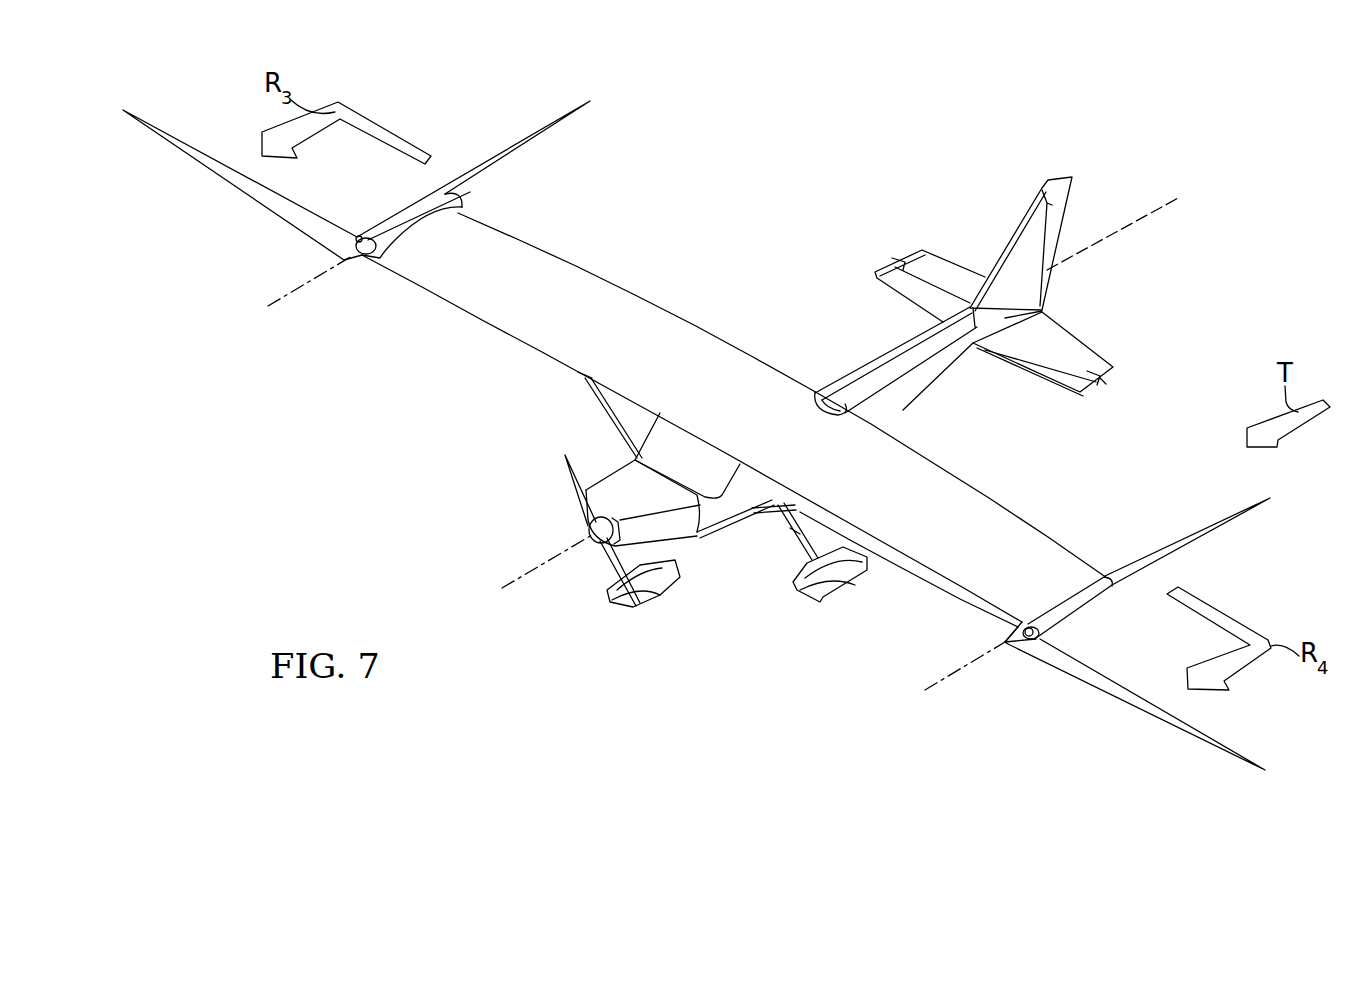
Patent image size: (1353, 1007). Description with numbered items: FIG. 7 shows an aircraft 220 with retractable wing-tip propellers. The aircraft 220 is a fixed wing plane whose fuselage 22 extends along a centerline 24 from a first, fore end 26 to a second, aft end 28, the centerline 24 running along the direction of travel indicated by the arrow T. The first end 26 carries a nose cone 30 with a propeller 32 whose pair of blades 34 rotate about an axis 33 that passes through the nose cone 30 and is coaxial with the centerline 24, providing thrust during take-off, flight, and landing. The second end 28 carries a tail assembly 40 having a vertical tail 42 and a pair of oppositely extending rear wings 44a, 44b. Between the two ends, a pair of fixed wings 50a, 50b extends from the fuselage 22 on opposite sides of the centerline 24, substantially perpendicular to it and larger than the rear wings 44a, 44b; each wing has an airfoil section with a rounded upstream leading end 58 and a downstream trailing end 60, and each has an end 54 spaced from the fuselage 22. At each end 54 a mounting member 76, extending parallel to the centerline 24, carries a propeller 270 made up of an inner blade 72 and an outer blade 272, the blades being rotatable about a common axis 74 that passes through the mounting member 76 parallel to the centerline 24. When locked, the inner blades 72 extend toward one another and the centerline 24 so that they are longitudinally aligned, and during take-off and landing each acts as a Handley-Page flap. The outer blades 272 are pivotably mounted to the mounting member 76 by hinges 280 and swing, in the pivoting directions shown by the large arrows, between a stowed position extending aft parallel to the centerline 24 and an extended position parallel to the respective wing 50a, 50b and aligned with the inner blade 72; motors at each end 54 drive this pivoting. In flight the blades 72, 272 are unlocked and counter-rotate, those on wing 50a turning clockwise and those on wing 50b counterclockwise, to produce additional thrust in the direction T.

The fuselage 22 is at (910, 388).
The centerline 24 is at (526, 591).
The first end 26 is at (671, 620).
The second end 28 is at (1135, 389).
The nose cone 30 is at (586, 541).
The propeller 32 is at (566, 534).
The axis 33 is at (546, 582).
The blades 34 is at (570, 483).
The tail assembly 40 is at (1120, 314).
The vertical tail 42 is at (1054, 207).
The rear wing 44a is at (927, 253).
The rear wing 44b is at (1105, 358).
The fixed wing 50a is at (505, 243).
The fixed wing 50b is at (1070, 568).
The end 54 is at (510, 199).
The leading end 58 is at (606, 421).
The trailing end 60 is at (642, 293).
The inner blade 72 is at (467, 310).
The axis 74 is at (282, 292).
The mounting member 76 is at (430, 197).
The aircraft 220 is at (805, 320).
The propeller 270 is at (341, 286).
The outer blade 272 is at (238, 184).
The hinge 280 is at (357, 236).